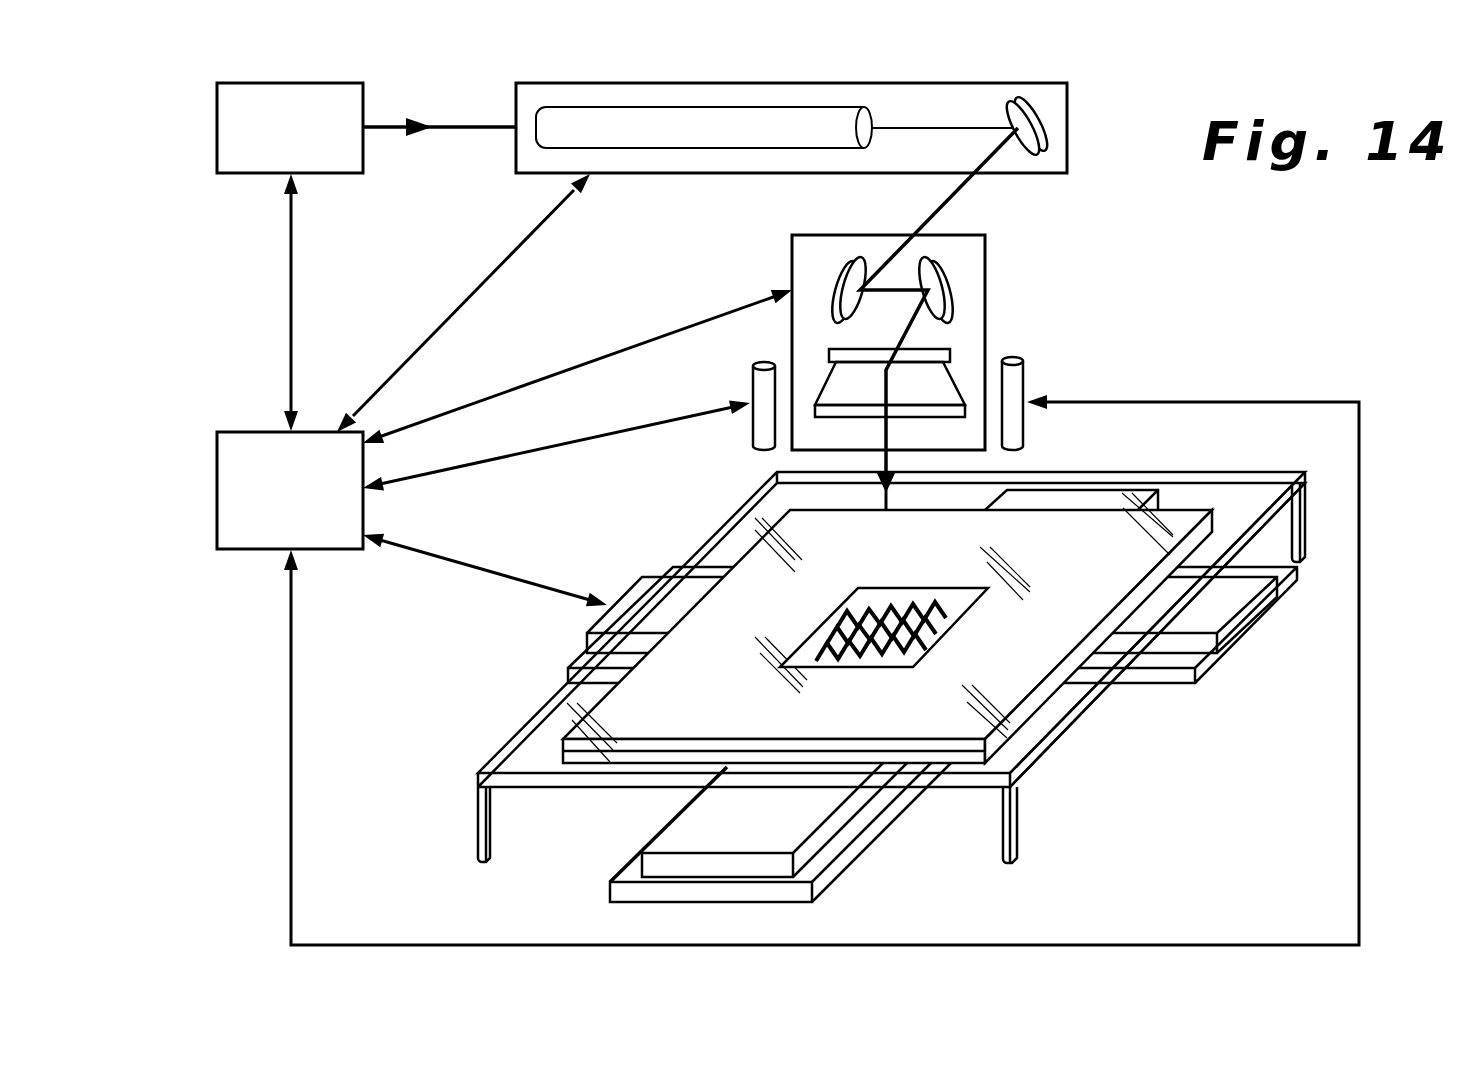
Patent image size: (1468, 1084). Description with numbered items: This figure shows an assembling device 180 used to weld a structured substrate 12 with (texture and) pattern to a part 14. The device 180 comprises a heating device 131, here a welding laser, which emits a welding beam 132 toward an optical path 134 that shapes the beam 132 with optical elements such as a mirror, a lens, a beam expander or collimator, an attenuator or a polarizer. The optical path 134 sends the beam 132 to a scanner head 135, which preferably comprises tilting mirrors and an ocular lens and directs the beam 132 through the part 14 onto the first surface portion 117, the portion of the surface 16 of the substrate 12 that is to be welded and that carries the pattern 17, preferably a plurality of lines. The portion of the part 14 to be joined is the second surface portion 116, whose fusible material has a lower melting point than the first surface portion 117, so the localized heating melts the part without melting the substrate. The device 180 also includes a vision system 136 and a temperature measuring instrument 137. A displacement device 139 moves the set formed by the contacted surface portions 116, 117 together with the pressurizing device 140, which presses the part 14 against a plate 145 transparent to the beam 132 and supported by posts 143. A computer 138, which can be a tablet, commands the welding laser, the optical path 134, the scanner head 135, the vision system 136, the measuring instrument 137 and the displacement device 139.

The substrate with (texture and) pattern 12 is at (1020, 717).
The part 14 is at (1190, 510).
The surface of the substrate 16 is at (583, 755).
The pattern 17 is at (952, 654).
The second surface portion 116 is at (660, 753).
The first surface portion 117 is at (975, 607).
The heating device 131 is at (217, 128).
The welding beam 132 is at (880, 459).
The optical path 134 is at (796, 83).
The scanner head 135 is at (985, 293).
The vision system 136 is at (751, 437).
The temperature measuring instrument 137 is at (1023, 432).
The computer 138 is at (217, 498).
The displacement device 139 is at (612, 878).
The pressurizing device 140 is at (1330, 502).
The posts 143 is at (1305, 542).
The plate 145 is at (1252, 503).
The assembling device 180 is at (1198, 336).